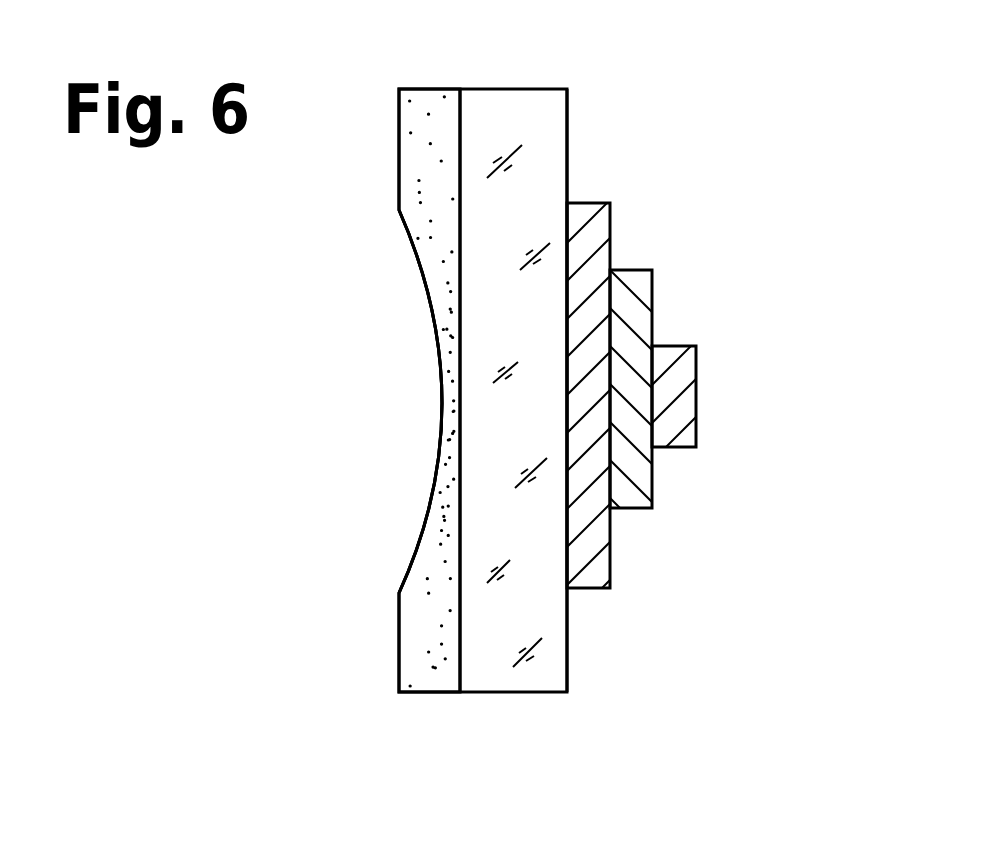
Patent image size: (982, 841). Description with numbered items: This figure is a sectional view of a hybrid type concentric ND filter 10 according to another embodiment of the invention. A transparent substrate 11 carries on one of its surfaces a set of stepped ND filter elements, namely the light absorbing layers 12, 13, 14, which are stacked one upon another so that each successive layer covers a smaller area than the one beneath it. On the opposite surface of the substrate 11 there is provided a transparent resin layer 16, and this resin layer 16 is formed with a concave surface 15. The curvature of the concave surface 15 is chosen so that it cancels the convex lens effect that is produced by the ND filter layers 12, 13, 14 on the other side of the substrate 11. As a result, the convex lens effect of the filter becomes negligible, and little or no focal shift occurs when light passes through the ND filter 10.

The concentric ND filter 10 is at (772, 133).
The transparent substrate 11 is at (523, 680).
The ND filter element 12 is at (605, 258).
The ND filter element 13 is at (648, 303).
The ND filter element 14 is at (690, 368).
The concave surface 15 is at (433, 483).
The transparent resin layer 16 is at (433, 680).